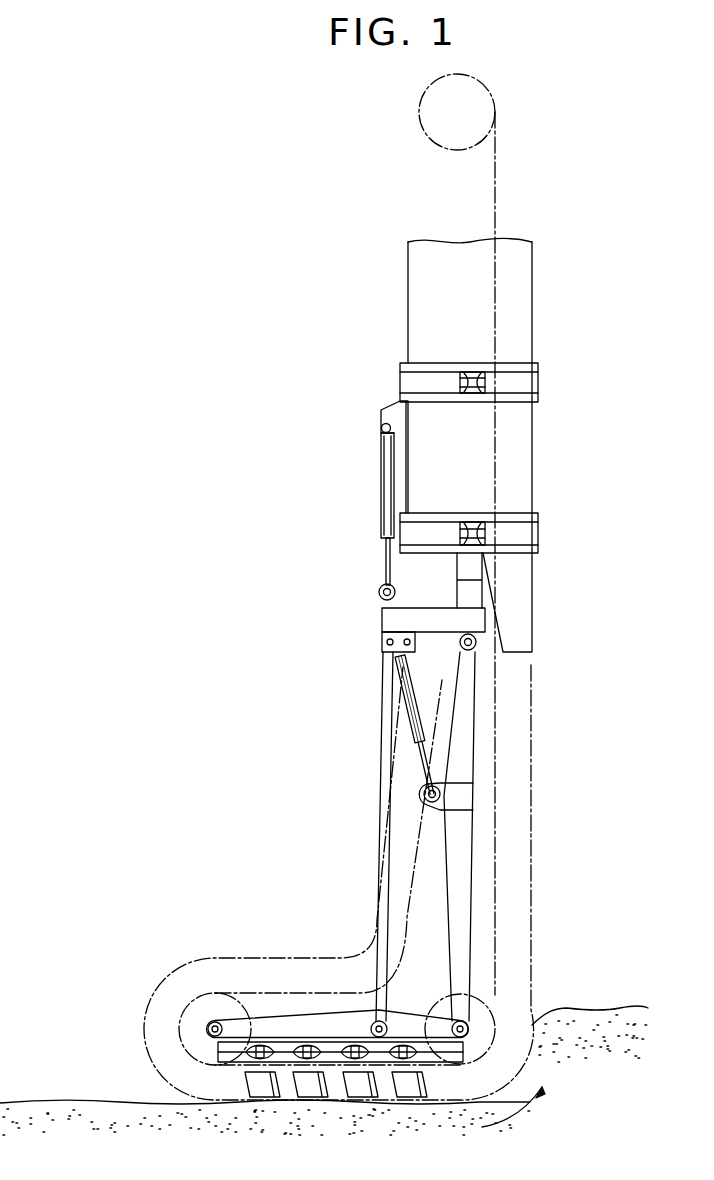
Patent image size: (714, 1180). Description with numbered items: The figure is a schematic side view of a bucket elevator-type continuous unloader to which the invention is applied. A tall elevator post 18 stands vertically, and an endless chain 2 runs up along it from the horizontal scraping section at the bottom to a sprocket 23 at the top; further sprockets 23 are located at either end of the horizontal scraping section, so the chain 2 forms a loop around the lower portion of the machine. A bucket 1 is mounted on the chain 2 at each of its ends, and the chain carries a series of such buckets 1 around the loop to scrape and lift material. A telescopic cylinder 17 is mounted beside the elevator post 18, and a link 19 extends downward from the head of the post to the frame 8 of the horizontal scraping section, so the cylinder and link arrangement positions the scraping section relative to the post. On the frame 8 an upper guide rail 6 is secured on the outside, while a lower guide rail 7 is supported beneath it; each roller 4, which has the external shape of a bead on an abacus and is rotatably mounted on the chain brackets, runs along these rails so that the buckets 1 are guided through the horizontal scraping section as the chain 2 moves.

The bucket 1 is at (268, 1078).
The chain 2 is at (495, 853).
The roller 4 is at (330, 1065).
The upper guide rail 6 is at (463, 1052).
The lower guide rail 7 is at (425, 1062).
The frame of horizontal scraping section 8 is at (288, 1015).
The telescopic cylinder 17 is at (385, 505).
The elevator post 18 is at (522, 487).
The link 19 is at (383, 748).
The sprocket 23 is at (430, 142).